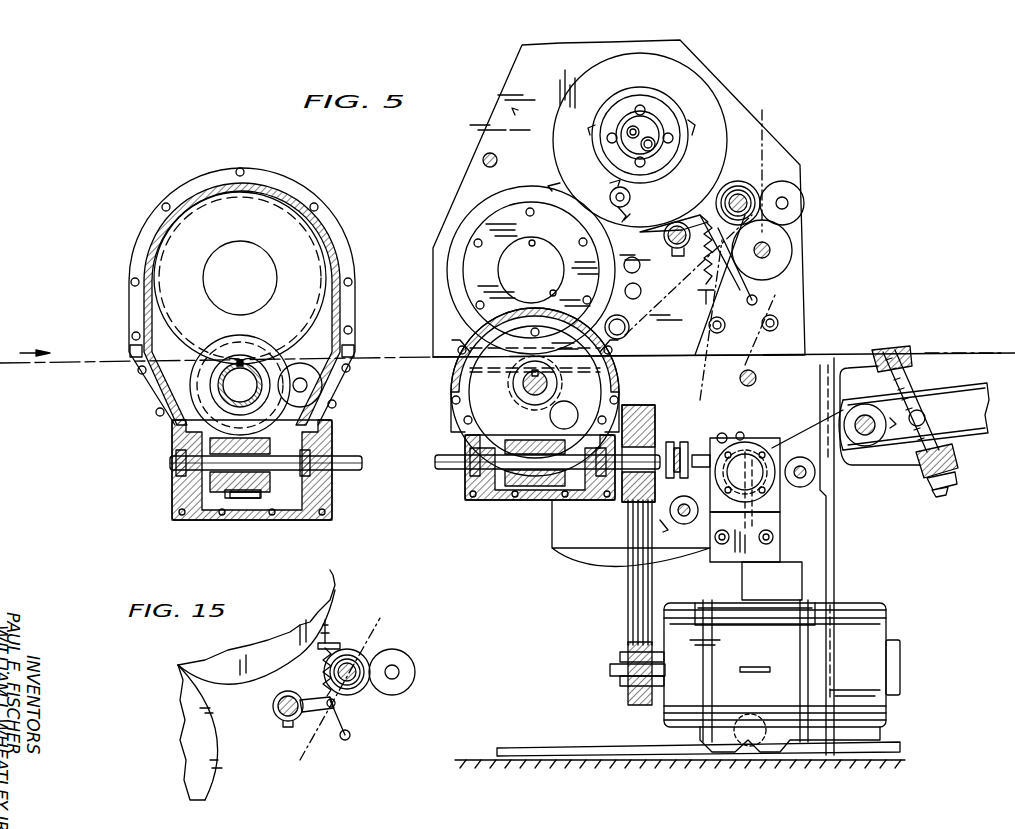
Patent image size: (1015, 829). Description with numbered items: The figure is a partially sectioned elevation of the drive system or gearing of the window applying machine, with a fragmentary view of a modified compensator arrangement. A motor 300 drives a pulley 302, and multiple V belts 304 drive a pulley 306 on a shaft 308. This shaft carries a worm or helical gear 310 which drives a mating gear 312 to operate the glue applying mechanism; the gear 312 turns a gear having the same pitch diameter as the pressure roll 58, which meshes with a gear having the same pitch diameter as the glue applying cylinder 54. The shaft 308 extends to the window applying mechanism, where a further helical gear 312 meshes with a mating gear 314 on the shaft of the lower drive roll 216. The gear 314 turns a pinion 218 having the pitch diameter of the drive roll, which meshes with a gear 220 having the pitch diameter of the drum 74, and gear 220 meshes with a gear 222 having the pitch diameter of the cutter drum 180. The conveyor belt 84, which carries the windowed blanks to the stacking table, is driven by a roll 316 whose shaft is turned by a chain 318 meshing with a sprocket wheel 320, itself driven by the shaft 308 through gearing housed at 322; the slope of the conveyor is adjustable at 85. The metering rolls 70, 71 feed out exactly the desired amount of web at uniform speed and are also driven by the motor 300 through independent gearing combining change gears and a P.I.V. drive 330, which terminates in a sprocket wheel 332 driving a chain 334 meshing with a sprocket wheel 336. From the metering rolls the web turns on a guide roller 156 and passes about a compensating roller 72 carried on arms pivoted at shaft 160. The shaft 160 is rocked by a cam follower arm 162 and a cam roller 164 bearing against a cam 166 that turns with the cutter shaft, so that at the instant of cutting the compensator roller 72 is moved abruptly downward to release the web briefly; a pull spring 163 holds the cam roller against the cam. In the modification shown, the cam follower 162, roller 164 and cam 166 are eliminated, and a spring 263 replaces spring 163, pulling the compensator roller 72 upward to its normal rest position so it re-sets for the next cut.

In FIG. 5, the glue applying cylinder 54 is at (205, 215).
In FIG. 5, the pressure roll 58 is at (205, 372).
In FIG. 5, the mating gear 312 is at (190, 408).
In FIG. 5, the shaft 308 is at (350, 468).
In FIG. 5, the worm or helical gear 310 is at (250, 498).
In FIG. 5, the drum 74 is at (497, 268).
In FIG. 15, the drum 74 is at (220, 725).
In FIG. 5, the gear 220 is at (450, 284).
In FIG. 5, the mating gear 314 is at (470, 386).
In FIG. 5, the lower drive roll 216 is at (491, 400).
In FIG. 5, the pinion 218 is at (512, 392).
In FIG. 5, the pulley 306 is at (652, 412).
In FIG. 5, the chain 334 is at (705, 370).
In FIG. 5, the sprocket wheel 320 is at (742, 468).
In FIG. 5, the chain 318 is at (812, 420).
In FIG. 5, the gearing housing 322 is at (788, 488).
In FIG. 5, the roll 316 is at (880, 450).
In FIG. 5, the conveyor belt 84 is at (940, 385).
In FIG. 5, the conveyor slope adjustment 85 is at (958, 476).
In FIG. 5, the sprocket wheel 336 is at (790, 248).
In FIG. 5, the guide roller 156 is at (735, 266).
In FIG. 15, the guide roller 156 is at (350, 740).
In FIG. 5, the pull spring 163 is at (700, 290).
In FIG. 5, the shaft 160 is at (674, 248).
In FIG. 15, the shaft 160 is at (282, 718).
In FIG. 5, the compensating roller 72 is at (722, 218).
In FIG. 15, the compensating roller 72 is at (345, 708).
In FIG. 5, the metering roll 71 is at (742, 192).
In FIG. 15, the metering roll 71 is at (352, 658).
In FIG. 5, the metering roll 70 is at (795, 195).
In FIG. 15, the metering roll 70 is at (400, 656).
In FIG. 5, the cam 166 is at (665, 108).
In FIG. 5, the cutter drum 180 is at (687, 140).
In FIG. 15, the cutter drum 180 is at (285, 690).
In FIG. 5, the gear 222 is at (687, 140).
In FIG. 5, the cam follower arm 162 is at (632, 200).
In FIG. 5, the cam roller 164 is at (618, 200).
In FIG. 5, the P.I.V. drive 330 is at (573, 568).
In FIG. 5, the sprocket wheel 332 is at (686, 524).
In FIG. 5, the V belts 304 is at (628, 628).
In FIG. 5, the pulley 302 is at (628, 690).
In FIG. 5, the motor 300 is at (880, 630).
In FIG. 15, the spring 263 is at (312, 625).